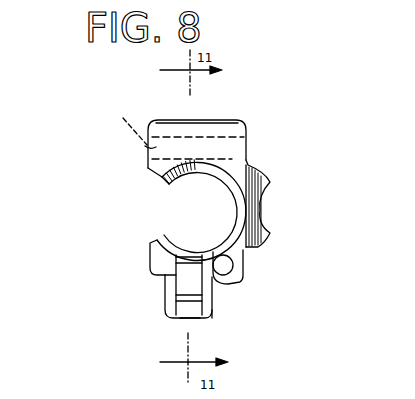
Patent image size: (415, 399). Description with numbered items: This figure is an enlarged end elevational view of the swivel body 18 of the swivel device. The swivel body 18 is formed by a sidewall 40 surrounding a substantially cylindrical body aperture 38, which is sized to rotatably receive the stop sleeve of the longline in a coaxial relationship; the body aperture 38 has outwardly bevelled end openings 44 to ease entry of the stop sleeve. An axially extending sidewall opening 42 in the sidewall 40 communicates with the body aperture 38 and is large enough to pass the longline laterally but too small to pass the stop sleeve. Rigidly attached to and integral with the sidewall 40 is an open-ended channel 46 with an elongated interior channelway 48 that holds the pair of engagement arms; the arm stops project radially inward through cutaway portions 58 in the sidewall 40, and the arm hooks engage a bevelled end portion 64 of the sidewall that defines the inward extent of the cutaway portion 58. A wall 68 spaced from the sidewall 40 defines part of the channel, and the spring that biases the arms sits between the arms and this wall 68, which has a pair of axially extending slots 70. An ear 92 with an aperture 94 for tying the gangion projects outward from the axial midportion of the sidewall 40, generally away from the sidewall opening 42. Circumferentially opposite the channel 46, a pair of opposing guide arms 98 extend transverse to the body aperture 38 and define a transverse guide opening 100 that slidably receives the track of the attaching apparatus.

The swivel body 18 is at (247, 170).
The body aperture 38 is at (205, 183).
The sidewall 40 is at (233, 185).
The sidewall opening 42 is at (153, 213).
The bevelled end openings 44 is at (160, 190).
The channel 46 is at (165, 290).
The channelway 48 is at (185, 283).
The cutaway portions 58 is at (170, 268).
The bevelled end portion 64 is at (187, 258).
The wall 68 is at (205, 320).
The slots 70 is at (185, 318).
The ear 92 is at (233, 278).
The aperture 94 is at (224, 264).
The guide arms 98 is at (230, 122).
The guide opening 100 is at (122, 127).